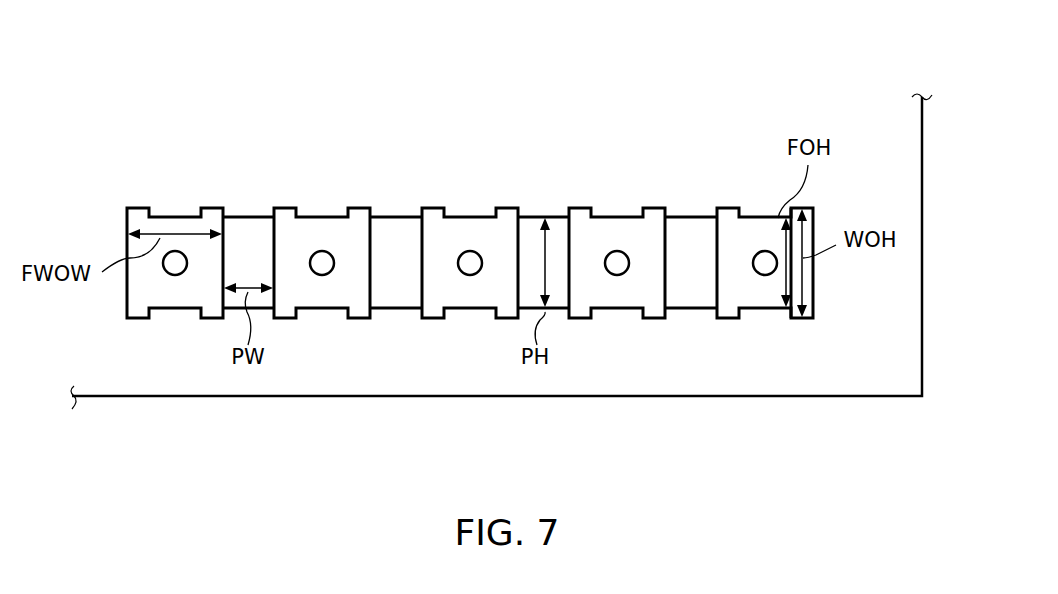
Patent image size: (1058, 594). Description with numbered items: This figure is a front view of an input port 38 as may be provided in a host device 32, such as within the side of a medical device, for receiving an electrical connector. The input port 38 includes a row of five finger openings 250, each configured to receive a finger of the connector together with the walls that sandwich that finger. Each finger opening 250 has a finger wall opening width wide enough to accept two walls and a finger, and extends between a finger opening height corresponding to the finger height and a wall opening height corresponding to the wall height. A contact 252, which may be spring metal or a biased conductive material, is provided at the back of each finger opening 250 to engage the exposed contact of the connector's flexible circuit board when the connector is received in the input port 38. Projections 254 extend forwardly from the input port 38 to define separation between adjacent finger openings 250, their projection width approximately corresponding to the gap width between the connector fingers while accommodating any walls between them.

The host device 32 is at (116, 412).
The input port 38 is at (254, 74).
The finger opening 250 is at (174, 194).
The contact 252 is at (175, 276).
The projection 254 is at (250, 230).